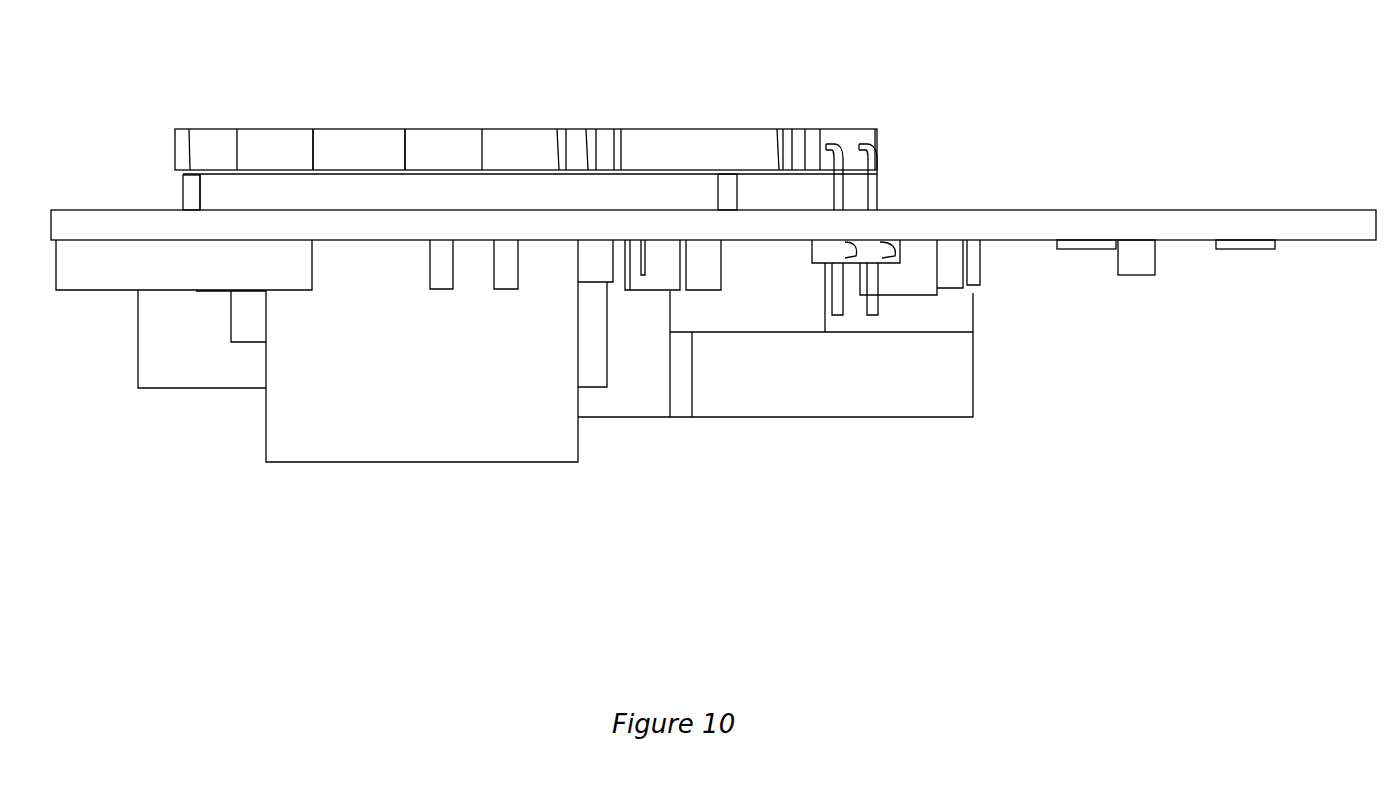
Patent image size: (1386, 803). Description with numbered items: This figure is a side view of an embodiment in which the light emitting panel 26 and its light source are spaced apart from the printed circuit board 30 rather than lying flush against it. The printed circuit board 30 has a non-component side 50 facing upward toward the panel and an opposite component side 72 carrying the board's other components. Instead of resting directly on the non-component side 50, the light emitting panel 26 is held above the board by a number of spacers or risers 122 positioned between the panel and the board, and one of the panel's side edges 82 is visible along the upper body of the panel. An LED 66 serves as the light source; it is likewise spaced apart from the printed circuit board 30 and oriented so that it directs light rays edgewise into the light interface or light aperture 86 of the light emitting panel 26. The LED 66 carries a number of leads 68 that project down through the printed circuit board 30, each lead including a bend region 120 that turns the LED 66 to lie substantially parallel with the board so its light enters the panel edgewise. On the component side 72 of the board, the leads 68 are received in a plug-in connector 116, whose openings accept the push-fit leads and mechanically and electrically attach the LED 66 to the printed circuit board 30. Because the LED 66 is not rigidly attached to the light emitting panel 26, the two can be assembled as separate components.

The light emitting panel 26 is at (522, 110).
The printed circuit board 30 is at (1262, 218).
The non-component side 50 is at (1033, 210).
The LED 66 is at (847, 138).
The leads 68 is at (843, 312).
The component side 72 is at (1033, 240).
The side edge 82 is at (355, 142).
The light aperture 86 is at (936, 245).
The plug-in connector 116 is at (897, 255).
The bend region 120 is at (873, 150).
The risers 122 is at (183, 191).